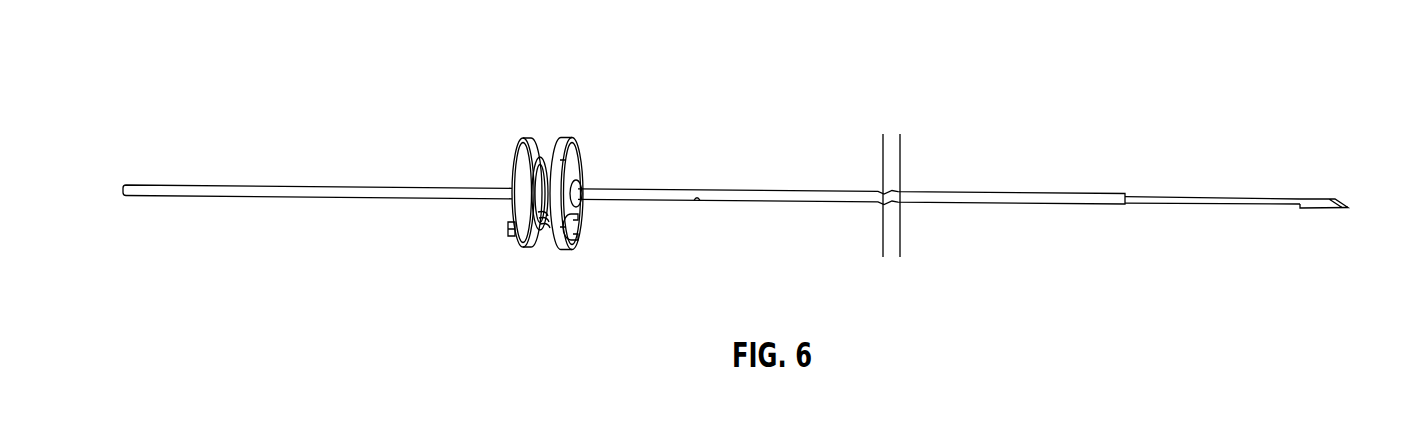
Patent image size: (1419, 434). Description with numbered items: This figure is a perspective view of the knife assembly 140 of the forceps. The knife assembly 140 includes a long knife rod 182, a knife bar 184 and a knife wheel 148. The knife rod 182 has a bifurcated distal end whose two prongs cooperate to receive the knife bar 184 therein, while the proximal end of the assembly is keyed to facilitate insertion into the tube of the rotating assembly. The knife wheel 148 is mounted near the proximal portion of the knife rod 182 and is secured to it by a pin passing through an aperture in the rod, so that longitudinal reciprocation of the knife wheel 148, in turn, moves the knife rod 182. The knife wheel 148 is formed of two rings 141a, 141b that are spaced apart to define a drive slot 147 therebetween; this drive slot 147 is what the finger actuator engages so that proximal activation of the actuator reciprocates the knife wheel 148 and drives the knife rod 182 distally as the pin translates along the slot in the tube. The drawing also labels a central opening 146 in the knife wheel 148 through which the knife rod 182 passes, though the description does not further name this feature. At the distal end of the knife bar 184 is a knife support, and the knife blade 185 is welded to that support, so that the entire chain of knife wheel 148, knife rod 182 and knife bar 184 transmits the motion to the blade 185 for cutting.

The knife assembly 140 is at (834, 116).
The ring 141a is at (513, 246).
The ring 141b is at (582, 248).
The aperture 146 is at (590, 207).
The drive slot 147 is at (557, 130).
The knife wheel 148 is at (587, 157).
The knife rod 182 is at (995, 193).
The knife bar 184 is at (1232, 197).
The knife blade 185 is at (1351, 201).